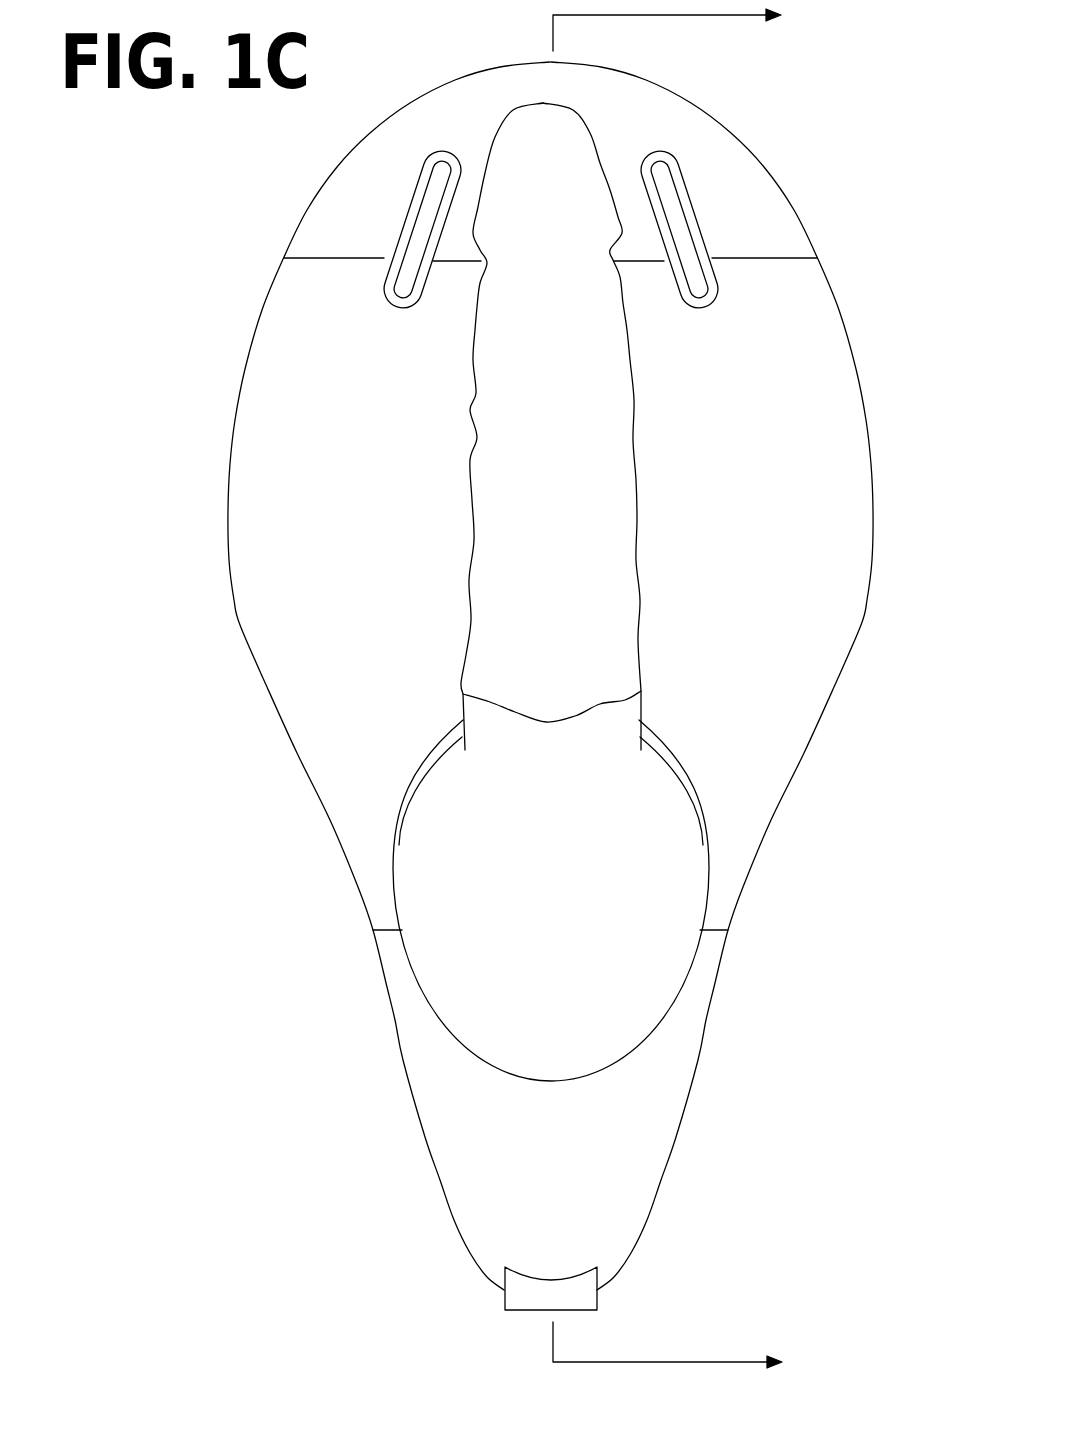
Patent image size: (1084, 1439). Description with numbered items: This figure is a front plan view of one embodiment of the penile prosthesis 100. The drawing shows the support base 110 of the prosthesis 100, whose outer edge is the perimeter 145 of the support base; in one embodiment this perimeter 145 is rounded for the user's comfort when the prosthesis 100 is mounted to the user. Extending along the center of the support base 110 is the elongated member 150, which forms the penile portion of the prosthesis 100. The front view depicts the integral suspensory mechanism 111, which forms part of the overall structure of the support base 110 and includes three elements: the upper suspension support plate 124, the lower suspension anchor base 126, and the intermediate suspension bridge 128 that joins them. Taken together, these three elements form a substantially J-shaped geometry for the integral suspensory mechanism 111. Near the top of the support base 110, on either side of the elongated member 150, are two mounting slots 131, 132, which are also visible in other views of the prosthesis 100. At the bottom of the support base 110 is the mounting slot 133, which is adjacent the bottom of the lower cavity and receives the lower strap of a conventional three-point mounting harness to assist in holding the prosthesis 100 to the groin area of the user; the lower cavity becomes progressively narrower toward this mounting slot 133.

The penile prosthesis 100 is at (939, 86).
The support base 110 is at (700, 138).
The integral suspensory mechanism 111 is at (410, 560).
The upper suspension support plate 124 is at (848, 443).
The lower suspension anchor base 126 is at (679, 882).
The intermediate suspension bridge 128 is at (672, 749).
The mounting slot 131 is at (401, 231).
The mounting slot 132 is at (692, 220).
The mounting slot 133 is at (553, 1277).
The perimeter of support base 145 is at (263, 300).
The elongated member 150 is at (535, 458).